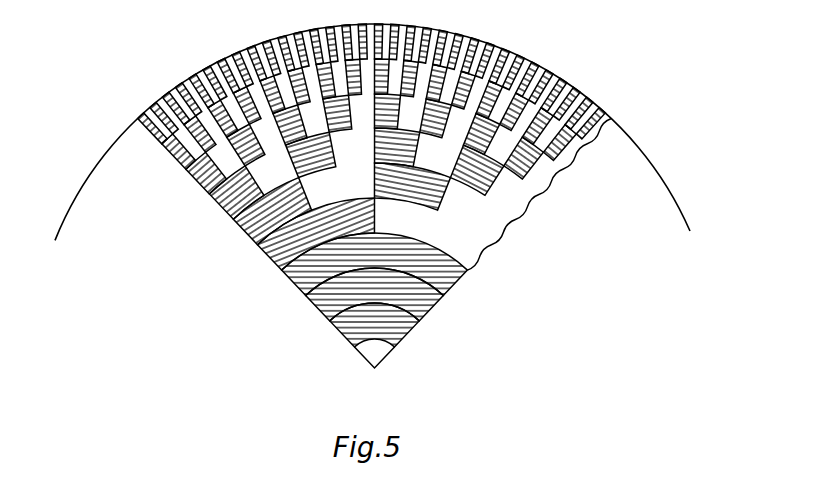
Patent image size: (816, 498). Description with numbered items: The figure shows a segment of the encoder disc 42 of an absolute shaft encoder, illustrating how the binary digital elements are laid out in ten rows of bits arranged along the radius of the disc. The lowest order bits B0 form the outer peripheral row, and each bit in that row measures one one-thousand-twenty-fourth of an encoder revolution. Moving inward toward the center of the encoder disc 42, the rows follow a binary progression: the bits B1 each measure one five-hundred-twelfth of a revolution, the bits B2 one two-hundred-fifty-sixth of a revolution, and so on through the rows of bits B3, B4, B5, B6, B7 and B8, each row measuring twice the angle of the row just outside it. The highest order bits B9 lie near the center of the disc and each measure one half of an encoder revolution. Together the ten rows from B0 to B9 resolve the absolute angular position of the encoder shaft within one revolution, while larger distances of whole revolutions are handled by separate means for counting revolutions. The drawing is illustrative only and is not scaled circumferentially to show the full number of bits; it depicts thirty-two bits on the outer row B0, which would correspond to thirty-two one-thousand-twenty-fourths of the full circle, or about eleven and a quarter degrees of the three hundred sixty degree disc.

The encoder disc 42 is at (509, 50).
The lowest order bits B0 is at (138, 133).
The bits of second row B1 is at (168, 163).
The bits of third row B2 is at (192, 188).
The bits of fourth row B3 is at (220, 212).
The bits of fifth row B4 is at (243, 235).
The bits of sixth row B5 is at (263, 256).
The bits of seventh row B6 is at (285, 280).
The bits of eighth row B7 is at (313, 304).
The bits of ninth row B8 is at (337, 330).
The highest order bits B9 is at (358, 356).